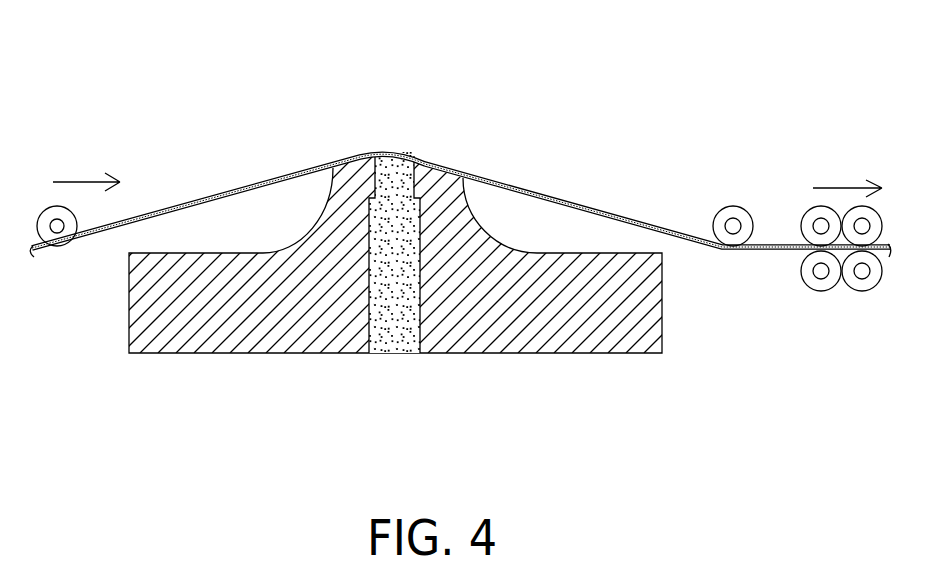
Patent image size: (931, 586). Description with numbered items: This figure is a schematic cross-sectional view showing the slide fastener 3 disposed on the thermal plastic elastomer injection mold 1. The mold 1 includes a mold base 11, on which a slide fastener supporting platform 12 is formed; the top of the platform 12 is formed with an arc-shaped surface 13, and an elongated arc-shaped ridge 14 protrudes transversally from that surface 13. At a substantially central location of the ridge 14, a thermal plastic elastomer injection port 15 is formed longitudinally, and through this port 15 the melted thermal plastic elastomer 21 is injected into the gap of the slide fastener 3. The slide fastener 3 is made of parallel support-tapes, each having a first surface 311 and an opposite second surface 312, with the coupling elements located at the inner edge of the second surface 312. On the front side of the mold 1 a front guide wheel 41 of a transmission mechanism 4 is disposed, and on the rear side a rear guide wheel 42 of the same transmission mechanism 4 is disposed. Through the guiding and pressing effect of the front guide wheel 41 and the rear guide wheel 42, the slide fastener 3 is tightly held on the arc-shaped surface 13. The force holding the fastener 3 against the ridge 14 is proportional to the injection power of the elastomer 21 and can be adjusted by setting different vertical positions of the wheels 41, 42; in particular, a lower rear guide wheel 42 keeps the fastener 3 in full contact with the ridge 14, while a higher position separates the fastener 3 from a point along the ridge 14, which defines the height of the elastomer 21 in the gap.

The thermal plastic elastomer injection mold 1 is at (465, 253).
The mold base 11 is at (483, 325).
The slide fastener supporting platform 12 is at (452, 198).
The arc-shaped surface 13 is at (344, 159).
The arc-shaped ridge 14 is at (394, 252).
The thermal plastic elastomer injection port 15 is at (378, 155).
The thermal plastic elastomer 21 is at (407, 348).
The slide fastener 3 is at (460, 181).
The first surface 311 is at (126, 236).
The second surface 312 is at (572, 202).
The transmission mechanism 4 is at (798, 172).
The front guide wheel 41 is at (58, 207).
The rear guide wheel 42 is at (733, 206).